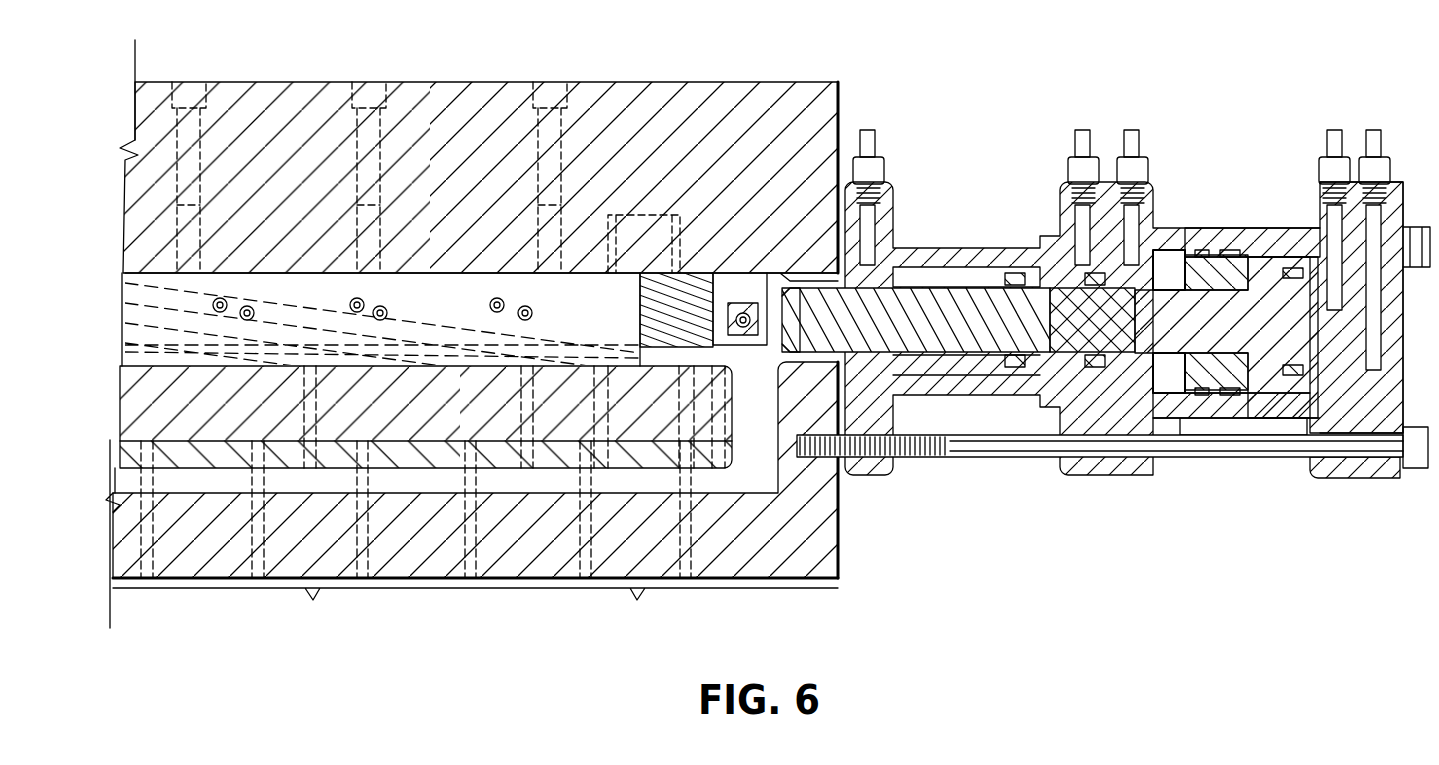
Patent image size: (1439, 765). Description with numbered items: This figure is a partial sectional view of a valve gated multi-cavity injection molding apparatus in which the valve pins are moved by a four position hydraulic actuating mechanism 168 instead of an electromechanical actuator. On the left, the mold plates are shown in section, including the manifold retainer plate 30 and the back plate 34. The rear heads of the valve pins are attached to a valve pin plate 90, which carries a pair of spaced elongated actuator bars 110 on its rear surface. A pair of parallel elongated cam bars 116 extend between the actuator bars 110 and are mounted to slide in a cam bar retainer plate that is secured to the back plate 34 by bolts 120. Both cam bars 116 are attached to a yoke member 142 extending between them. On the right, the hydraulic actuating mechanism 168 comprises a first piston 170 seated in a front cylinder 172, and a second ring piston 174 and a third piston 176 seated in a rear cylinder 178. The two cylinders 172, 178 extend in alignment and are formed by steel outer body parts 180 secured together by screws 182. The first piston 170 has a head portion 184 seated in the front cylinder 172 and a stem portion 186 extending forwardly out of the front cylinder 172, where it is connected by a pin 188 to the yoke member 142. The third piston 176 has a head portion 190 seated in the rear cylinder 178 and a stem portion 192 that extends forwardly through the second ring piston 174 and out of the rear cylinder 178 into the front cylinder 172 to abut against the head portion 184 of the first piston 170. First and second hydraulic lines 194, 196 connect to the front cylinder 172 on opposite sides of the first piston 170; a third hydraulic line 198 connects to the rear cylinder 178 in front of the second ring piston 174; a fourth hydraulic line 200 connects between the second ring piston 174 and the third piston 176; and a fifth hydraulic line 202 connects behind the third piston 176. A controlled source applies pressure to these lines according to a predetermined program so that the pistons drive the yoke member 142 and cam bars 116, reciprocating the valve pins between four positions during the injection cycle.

The manifold retainer plate 30 is at (517, 552).
The back plate 34 is at (291, 108).
The valve pin plate 90 is at (176, 403).
The actuator bars 110 is at (218, 358).
The cam bars 116 is at (700, 272).
The bolts 120 is at (370, 95).
The yoke member 142 is at (730, 300).
The hydraulic actuating mechanism 168 is at (1407, 498).
The first piston 170 is at (968, 305).
The front cylinder 172 is at (932, 252).
The second ring piston 174 is at (1213, 226).
The third piston 176 is at (1267, 283).
The rear cylinder 178 is at (1168, 255).
The outer body parts 180 is at (1373, 383).
The screws 182 is at (1222, 457).
The head portion 184 is at (1025, 345).
The stem portion 186 is at (878, 315).
The pin 188 is at (752, 270).
The head portion 190 is at (1295, 337).
The stem portion 192 is at (1108, 337).
The first hydraulic line 194 is at (868, 135).
The second hydraulic line 196 is at (1083, 140).
The third hydraulic line 198 is at (1133, 140).
The fourth hydraulic line 200 is at (1335, 140).
The fifth hydraulic line 202 is at (1376, 140).